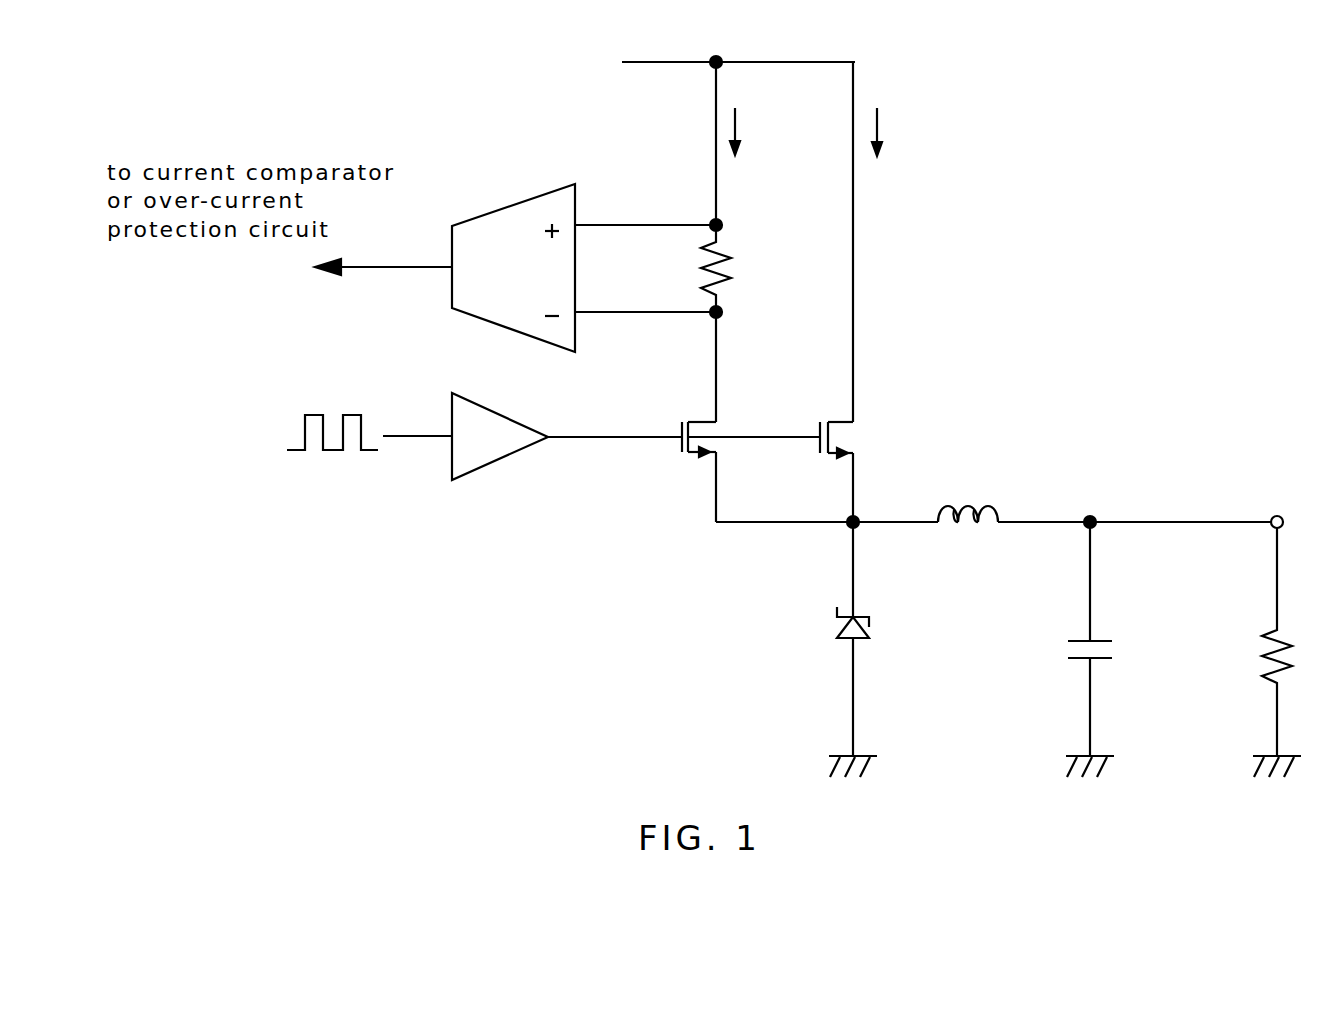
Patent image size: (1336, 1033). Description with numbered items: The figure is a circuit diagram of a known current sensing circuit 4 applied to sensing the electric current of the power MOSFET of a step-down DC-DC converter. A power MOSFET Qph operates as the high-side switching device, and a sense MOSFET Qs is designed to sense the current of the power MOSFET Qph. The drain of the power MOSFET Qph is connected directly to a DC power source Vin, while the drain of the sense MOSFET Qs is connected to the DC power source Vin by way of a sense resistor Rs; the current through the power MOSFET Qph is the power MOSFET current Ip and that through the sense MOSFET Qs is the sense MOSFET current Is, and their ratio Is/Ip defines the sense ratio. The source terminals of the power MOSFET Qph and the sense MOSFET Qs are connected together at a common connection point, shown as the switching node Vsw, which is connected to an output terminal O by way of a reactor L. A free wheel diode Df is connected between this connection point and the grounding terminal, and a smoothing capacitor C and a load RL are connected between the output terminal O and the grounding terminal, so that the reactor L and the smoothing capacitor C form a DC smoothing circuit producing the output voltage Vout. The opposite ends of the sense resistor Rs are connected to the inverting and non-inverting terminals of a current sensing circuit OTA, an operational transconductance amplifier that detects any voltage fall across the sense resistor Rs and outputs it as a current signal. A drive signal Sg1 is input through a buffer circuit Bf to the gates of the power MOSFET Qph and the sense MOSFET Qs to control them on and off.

The current sensing circuit 4 is at (528, 674).
The DC power source Vin is at (738, 48).
The sense MOSFET current Is is at (749, 131).
The power MOSFET current Ip is at (891, 132).
The sense resistor Rs is at (735, 257).
The current sensing circuit (operational transconductance amplifier) OTA is at (527, 190).
The drive signal Sg1 is at (290, 433).
The buffer circuit Bf is at (492, 462).
The sense MOSFET Qs is at (680, 456).
The power MOSFET Qph is at (855, 437).
The switching node voltage Vsw is at (842, 530).
The free wheel diode Df is at (838, 622).
The reactor L is at (998, 505).
The smoothing capacitor C is at (1068, 650).
The output voltage Vout is at (1180, 509).
The output terminal O is at (1274, 514).
The load RL is at (1262, 655).